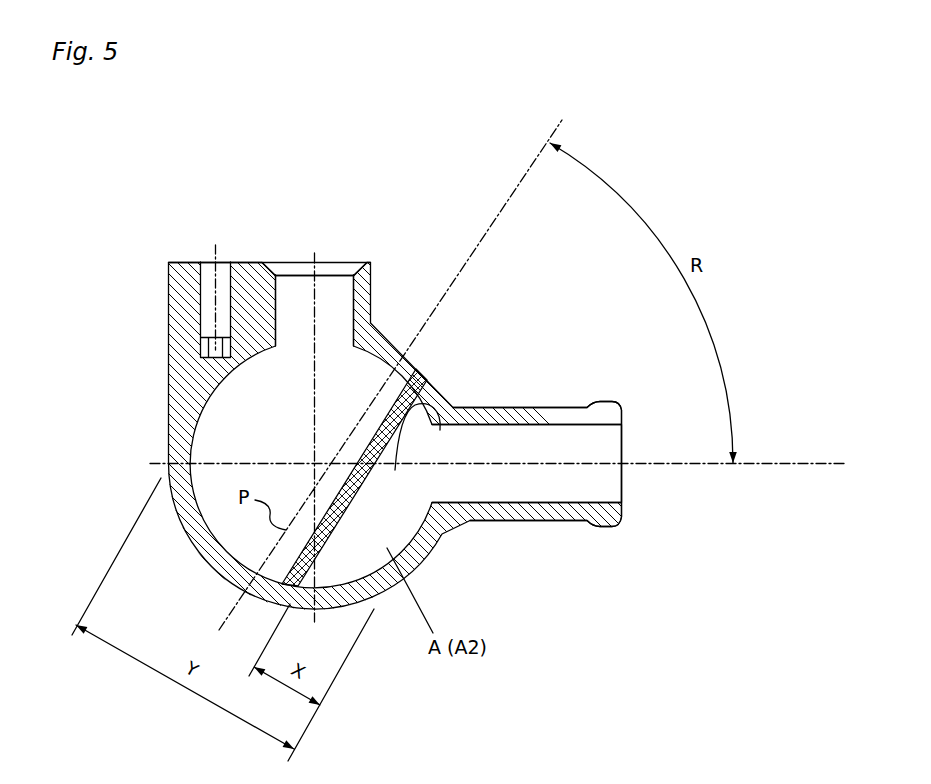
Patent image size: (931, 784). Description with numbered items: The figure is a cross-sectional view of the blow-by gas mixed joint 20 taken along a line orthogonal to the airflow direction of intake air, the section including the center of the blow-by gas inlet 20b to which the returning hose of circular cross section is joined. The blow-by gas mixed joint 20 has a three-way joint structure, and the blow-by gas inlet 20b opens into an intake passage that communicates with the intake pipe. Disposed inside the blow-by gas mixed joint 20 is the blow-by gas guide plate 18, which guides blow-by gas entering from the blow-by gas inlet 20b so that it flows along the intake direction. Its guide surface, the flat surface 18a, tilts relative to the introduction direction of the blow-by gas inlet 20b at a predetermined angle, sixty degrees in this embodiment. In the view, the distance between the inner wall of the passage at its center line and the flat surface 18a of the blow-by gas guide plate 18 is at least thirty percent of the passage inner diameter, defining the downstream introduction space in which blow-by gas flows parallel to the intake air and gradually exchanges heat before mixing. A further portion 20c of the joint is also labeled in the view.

The blow-by gas mixed joint 20 is at (375, 232).
The blow-by gas inlet 20b is at (561, 407).
The upper neck portion 20c is at (372, 278).
The blow-by gas guide plate 18 is at (408, 372).
The flat surface 18a is at (447, 402).